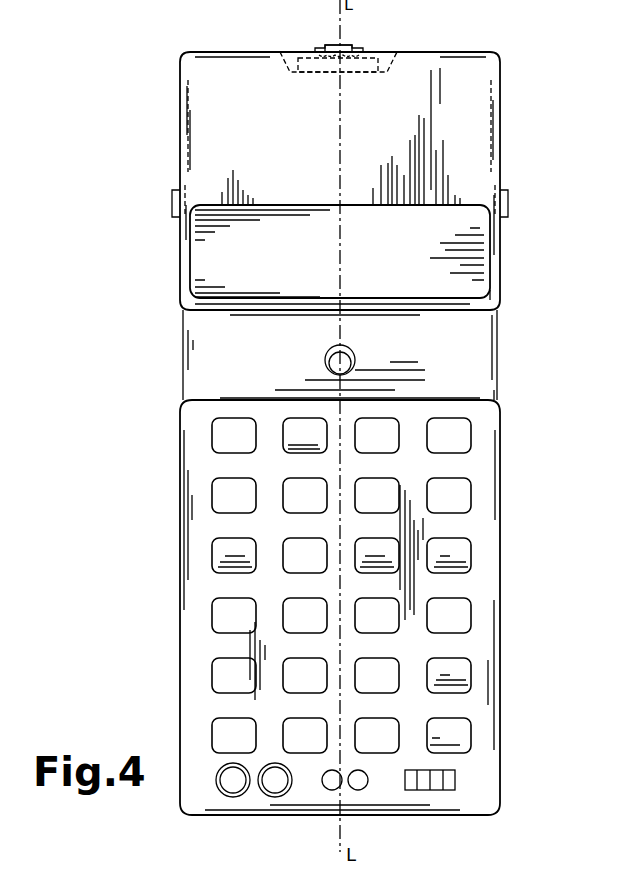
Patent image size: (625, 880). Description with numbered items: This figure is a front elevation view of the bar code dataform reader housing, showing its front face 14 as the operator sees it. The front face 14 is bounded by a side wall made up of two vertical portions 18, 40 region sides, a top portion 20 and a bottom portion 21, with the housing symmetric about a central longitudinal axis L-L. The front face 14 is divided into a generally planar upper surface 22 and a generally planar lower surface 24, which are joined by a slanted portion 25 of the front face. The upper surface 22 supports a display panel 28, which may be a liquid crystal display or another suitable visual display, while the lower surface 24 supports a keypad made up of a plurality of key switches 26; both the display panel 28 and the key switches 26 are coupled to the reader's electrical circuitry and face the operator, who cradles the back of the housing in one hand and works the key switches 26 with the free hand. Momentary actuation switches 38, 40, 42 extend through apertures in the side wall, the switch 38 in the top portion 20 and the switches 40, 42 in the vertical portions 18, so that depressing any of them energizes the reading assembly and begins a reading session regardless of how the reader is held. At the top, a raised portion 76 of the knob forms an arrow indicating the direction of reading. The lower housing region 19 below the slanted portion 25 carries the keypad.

The front face 14 is at (158, 328).
The vertical side wall portion 18 is at (500, 286).
The lower housing portion 19 is at (180, 378).
The top side wall portion 20 is at (432, 52).
The bottom side wall portion 21 is at (413, 815).
The upper surface 22 is at (314, 149).
The lower surface 24 is at (284, 540).
The slanted portion 25 is at (250, 374).
The key switches 26 is at (455, 432).
The display panel 28 is at (420, 237).
The actuation switch 38 is at (327, 47).
The actuation switch 40 is at (508, 203).
The actuation switch 42 is at (172, 197).
The raised portion 76 is at (357, 46).